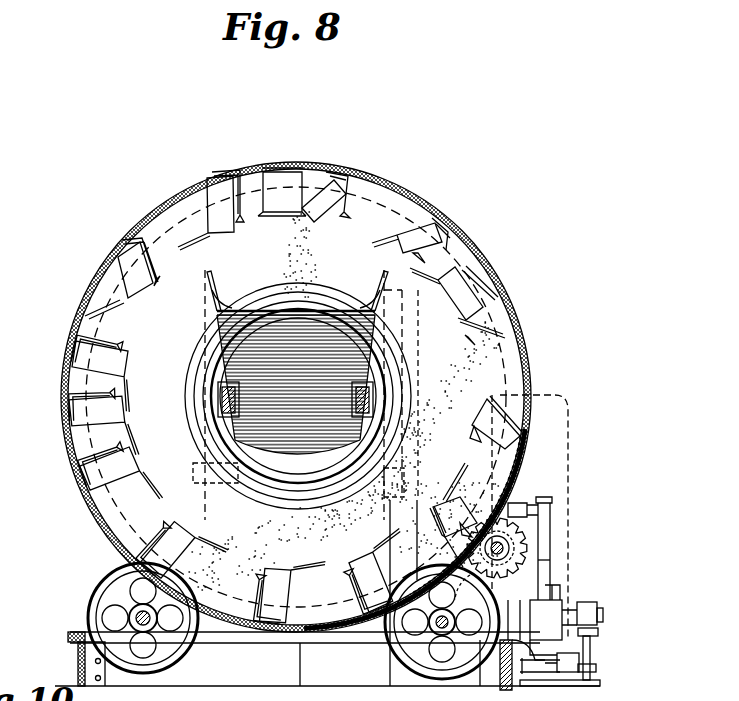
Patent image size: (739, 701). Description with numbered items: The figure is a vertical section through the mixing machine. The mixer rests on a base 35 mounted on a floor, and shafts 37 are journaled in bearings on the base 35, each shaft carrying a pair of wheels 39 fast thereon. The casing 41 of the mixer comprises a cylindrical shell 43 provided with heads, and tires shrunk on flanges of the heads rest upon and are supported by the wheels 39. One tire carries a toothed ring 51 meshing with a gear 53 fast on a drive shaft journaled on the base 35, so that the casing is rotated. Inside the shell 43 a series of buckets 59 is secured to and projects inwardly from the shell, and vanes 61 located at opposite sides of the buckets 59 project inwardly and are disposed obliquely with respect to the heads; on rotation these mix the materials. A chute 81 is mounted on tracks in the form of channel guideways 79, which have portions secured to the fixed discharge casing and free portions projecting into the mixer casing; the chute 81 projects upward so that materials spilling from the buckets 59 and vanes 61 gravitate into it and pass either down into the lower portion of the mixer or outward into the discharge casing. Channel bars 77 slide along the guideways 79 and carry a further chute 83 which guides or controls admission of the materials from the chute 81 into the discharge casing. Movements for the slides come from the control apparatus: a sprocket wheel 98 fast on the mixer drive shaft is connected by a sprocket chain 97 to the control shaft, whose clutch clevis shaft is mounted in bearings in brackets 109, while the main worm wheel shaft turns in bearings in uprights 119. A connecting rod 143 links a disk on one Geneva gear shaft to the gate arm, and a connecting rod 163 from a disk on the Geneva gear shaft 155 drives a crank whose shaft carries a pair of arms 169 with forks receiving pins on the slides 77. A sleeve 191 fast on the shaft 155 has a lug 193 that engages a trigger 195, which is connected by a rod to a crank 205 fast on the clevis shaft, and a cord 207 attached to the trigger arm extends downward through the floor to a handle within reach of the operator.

The base 35 is at (300, 686).
The shafts 37 is at (436, 626).
The wheels 39 is at (398, 660).
The casing 41 is at (62, 409).
The cylindrical shell 43 is at (63, 373).
The toothed ring 51 is at (522, 460).
The gear 53 is at (508, 520).
The buckets 59 is at (365, 580).
The vanes 61 is at (385, 552).
The channel bars 77 is at (370, 398).
The channel guideways 79 is at (372, 393).
The chute 81 is at (315, 322).
The chute 83 is at (205, 434).
The sprocket chain 97 is at (518, 648).
The sprocket wheel 98 is at (535, 556).
The brackets 109 is at (545, 672).
The uprights 119 is at (553, 545).
The connecting rod 143 is at (402, 333).
The Geneva gear shaft 155 is at (566, 600).
The connecting rod 163 is at (412, 518).
The arms 169 is at (392, 405).
The sleeve 191 is at (590, 602).
The lug 193 is at (598, 622).
The trigger 195 is at (596, 668).
The crank 205 is at (592, 652).
The cord 207 is at (600, 683).